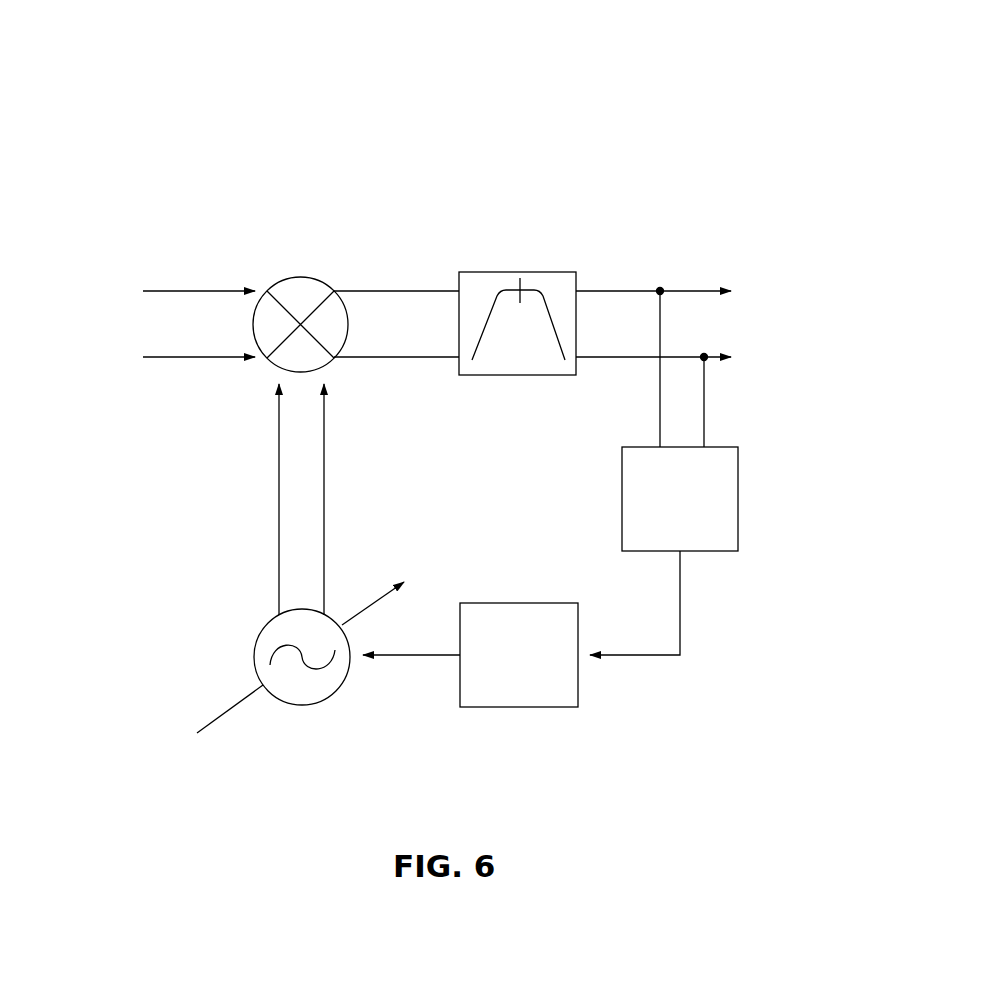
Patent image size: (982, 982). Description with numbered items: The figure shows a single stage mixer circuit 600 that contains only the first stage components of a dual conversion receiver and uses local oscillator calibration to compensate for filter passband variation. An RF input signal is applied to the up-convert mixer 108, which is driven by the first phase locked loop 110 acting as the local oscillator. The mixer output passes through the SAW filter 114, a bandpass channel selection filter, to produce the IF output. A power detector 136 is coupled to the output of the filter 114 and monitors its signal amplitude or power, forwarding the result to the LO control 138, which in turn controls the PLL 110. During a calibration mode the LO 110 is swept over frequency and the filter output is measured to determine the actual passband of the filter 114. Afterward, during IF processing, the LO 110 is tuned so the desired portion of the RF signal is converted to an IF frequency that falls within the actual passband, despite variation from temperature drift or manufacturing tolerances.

The single stage mixer circuit 600 is at (922, 132).
The up-convert mixer 108 is at (303, 275).
The SAW filter 114 is at (520, 272).
The power detector 136 is at (738, 505).
The first phase locked loop 110 is at (300, 710).
The LO control 138 is at (528, 707).